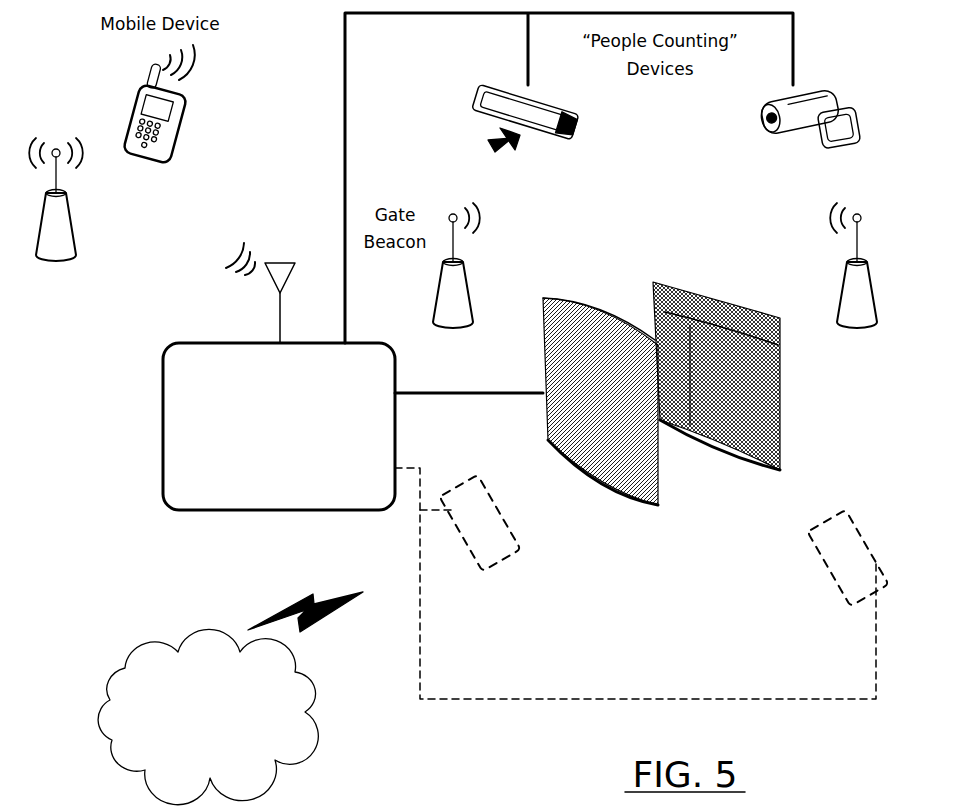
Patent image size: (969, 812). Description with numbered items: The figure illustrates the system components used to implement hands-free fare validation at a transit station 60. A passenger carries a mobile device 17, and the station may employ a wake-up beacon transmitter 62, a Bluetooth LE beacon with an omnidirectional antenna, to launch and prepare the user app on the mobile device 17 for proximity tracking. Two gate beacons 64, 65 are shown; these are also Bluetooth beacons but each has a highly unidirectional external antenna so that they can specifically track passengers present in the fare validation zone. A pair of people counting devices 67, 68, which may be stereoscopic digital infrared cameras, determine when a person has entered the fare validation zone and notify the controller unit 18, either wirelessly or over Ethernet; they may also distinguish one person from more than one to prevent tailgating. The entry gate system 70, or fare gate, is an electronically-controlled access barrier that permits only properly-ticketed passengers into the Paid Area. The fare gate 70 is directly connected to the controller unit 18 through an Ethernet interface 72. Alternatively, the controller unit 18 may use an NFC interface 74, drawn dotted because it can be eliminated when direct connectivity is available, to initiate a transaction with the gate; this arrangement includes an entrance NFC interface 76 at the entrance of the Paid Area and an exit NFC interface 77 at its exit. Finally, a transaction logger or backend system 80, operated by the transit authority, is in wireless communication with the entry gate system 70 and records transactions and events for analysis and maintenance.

The mobile device 17 is at (183, 127).
The controller unit 18 is at (163, 388).
The transit station 60 is at (70, 508).
The wake-up beacon transmitter 62 is at (73, 220).
The gate beacon 64 is at (471, 283).
The gate beacon 65 is at (841, 283).
The people counting device 67 is at (565, 135).
The people counting device 68 is at (750, 133).
The entry gate system 70 is at (720, 506).
The Ethernet interface 72 is at (445, 390).
The NFC interface 74 is at (623, 698).
The entrance NFC interface 76 is at (815, 591).
The exit NFC interface 77 is at (498, 554).
The transaction logger 80 is at (95, 750).